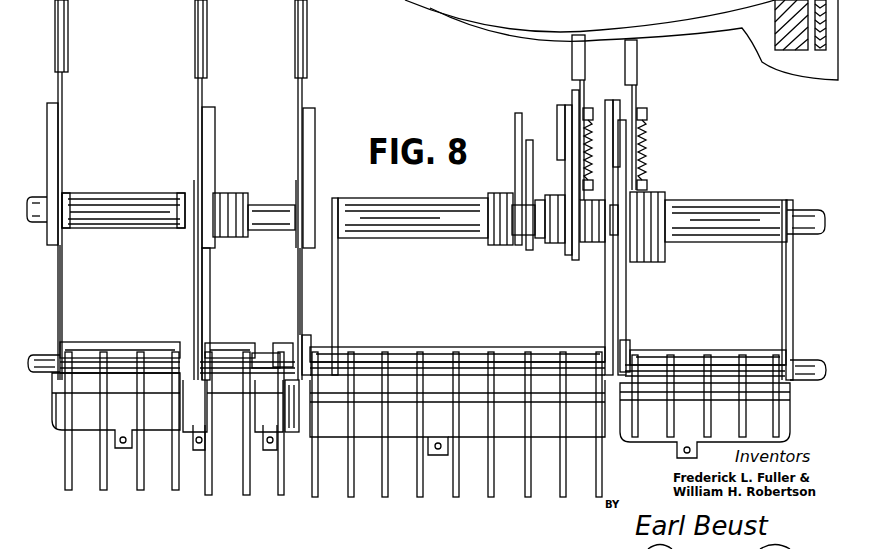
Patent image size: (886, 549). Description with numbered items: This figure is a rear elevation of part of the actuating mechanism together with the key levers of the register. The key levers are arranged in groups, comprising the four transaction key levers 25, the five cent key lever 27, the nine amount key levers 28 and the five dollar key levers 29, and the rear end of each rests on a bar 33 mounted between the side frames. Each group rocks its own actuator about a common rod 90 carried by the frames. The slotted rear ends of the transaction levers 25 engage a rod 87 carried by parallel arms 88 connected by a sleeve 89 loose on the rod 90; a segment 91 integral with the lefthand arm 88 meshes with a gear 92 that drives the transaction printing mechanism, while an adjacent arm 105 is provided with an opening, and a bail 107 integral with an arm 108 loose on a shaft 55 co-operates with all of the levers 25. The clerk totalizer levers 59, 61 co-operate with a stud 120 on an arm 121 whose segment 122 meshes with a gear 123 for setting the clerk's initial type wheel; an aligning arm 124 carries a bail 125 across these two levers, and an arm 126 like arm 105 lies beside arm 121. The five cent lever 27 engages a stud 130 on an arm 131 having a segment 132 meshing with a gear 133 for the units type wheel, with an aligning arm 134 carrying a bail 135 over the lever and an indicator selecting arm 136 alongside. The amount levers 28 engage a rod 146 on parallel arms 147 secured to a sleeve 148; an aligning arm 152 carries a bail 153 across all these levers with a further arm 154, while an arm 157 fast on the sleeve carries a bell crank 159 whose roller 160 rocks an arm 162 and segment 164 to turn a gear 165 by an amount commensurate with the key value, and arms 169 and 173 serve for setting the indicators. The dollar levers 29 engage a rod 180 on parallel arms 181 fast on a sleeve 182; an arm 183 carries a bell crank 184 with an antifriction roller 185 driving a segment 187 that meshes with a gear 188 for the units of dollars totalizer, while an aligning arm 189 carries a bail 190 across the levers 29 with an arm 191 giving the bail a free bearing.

The transaction key levers 25 is at (176, 490).
The "5" cent key lever 27 is at (281, 495).
The amount key levers 28 is at (318, 497).
The dollar key levers 29 is at (775, 378).
The bar 33 is at (775, 23).
The shaft 55 is at (40, 355).
The clerk totalizer lever 59 is at (208, 495).
The clerk totalizer lever 61 is at (246, 495).
The rod 87 is at (85, 343).
The parallel arms 88 is at (62, 252).
The sleeve 89 is at (78, 193).
The rod 90 is at (37, 197).
The segment 91 is at (62, 86).
The gear 92 is at (68, 30).
The arm 105 is at (58, 128).
The bail 107 is at (80, 425).
The arm 108 is at (62, 272).
The stud 120 is at (216, 343).
The arm 121 is at (210, 262).
The segment 122 is at (202, 87).
The gear 123 is at (207, 23).
The aligning arm 124 is at (198, 283).
The bail 125 is at (228, 430).
The arm 126 is at (215, 128).
The stud 130 is at (285, 343).
The arm 131 is at (297, 238).
The segment 132 is at (302, 90).
The gear 133 is at (307, 21).
The aligning arm 134 is at (297, 265).
The bail 135 is at (294, 432).
The indicator selecting arm 136 is at (315, 127).
The rod 146 is at (375, 347).
The parallel arms 147 is at (338, 250).
The sleeve 148 is at (400, 198).
The aligning arm 152 is at (605, 312).
The bail 153 is at (473, 432).
The arm 154 is at (306, 335).
The arm 157 is at (574, 260).
The bell crank 159 is at (557, 105).
The roller 160 is at (586, 108).
The arm 162 is at (566, 177).
The segment 164 is at (584, 70).
The gear 165 is at (585, 43).
The arm 169 is at (530, 250).
The arm 173 is at (515, 130).
The rod 180 is at (660, 350).
The parallel arms 181 is at (628, 272).
The sleeve 182 is at (712, 200).
The arm 183 is at (645, 180).
The bell crank 184 is at (620, 104).
The antifriction roller 185 is at (647, 115).
The segment 187 is at (636, 70).
The gear 188 is at (637, 50).
The aligning arm 189 is at (786, 260).
The bail 190 is at (790, 405).
The arm 191 is at (630, 350).